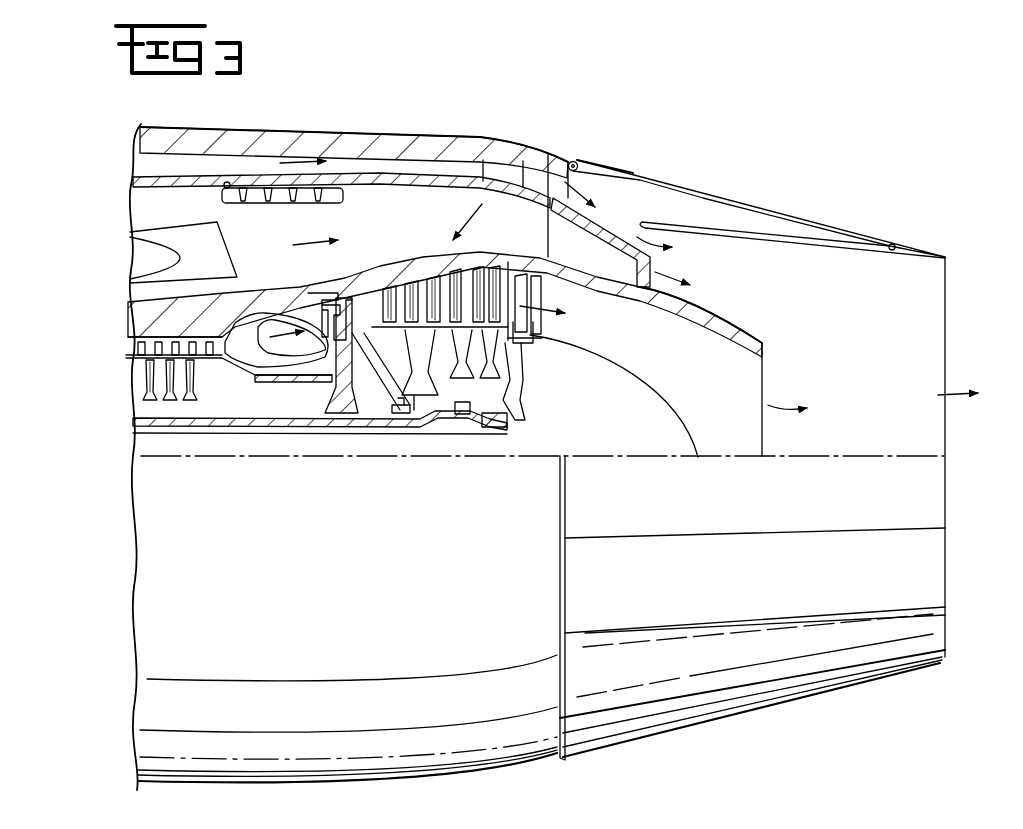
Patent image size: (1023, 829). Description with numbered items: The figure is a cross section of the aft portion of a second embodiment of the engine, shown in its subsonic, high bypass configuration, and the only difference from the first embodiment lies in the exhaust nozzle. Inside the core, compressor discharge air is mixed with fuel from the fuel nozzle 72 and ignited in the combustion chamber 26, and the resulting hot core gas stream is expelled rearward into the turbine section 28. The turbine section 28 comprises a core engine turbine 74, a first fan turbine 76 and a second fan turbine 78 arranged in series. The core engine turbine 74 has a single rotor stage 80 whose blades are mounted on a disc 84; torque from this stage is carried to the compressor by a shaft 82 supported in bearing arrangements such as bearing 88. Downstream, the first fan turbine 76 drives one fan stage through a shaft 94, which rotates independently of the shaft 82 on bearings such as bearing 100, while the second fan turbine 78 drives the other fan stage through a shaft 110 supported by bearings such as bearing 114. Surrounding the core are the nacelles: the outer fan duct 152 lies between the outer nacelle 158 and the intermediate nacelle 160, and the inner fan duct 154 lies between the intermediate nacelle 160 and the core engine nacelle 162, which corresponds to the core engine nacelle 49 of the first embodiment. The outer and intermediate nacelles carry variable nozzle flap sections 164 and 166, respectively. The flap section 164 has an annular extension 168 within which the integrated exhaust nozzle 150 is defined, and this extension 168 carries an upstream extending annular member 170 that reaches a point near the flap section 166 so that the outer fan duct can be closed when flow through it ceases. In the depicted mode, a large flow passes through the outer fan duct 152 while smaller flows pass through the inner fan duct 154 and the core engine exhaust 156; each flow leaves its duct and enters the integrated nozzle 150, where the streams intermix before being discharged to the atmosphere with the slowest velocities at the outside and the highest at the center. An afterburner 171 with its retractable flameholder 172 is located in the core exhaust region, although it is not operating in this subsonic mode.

The combustion chamber 26 is at (288, 340).
The turbine section 28 is at (478, 219).
The core engine nacelle 49 is at (645, 293).
The fuel nozzle 72 is at (258, 350).
The core engine turbine 74 is at (348, 298).
The first fan turbine 76 is at (403, 272).
The second fan turbine 78 is at (500, 292).
The rotor stage 80 is at (345, 334).
The shaft 82 is at (268, 378).
The disc 84 is at (328, 405).
The bearing arrangement 88 is at (403, 417).
The shaft 94 is at (180, 420).
The bearing 100 is at (462, 410).
The shaft 110 is at (256, 430).
The bearing 114 is at (498, 415).
The integrated exhaust nozzle 150 is at (906, 379).
The outer fan duct 152 is at (437, 170).
The inner fan duct 154 is at (438, 240).
The core engine exhaust 156 is at (726, 379).
The outer nacelle 158 is at (517, 143).
The intermediate nacelle 160 is at (386, 176).
The core engine nacelle 162 is at (500, 240).
The variable nozzle flap section 164 is at (703, 190).
The variable nozzle flap section 166 is at (603, 230).
The annular extension 168 is at (948, 272).
The upstream extending annular member 170 is at (735, 246).
The afterburner 171 is at (222, 262).
The retractable flameholder 172 is at (272, 205).